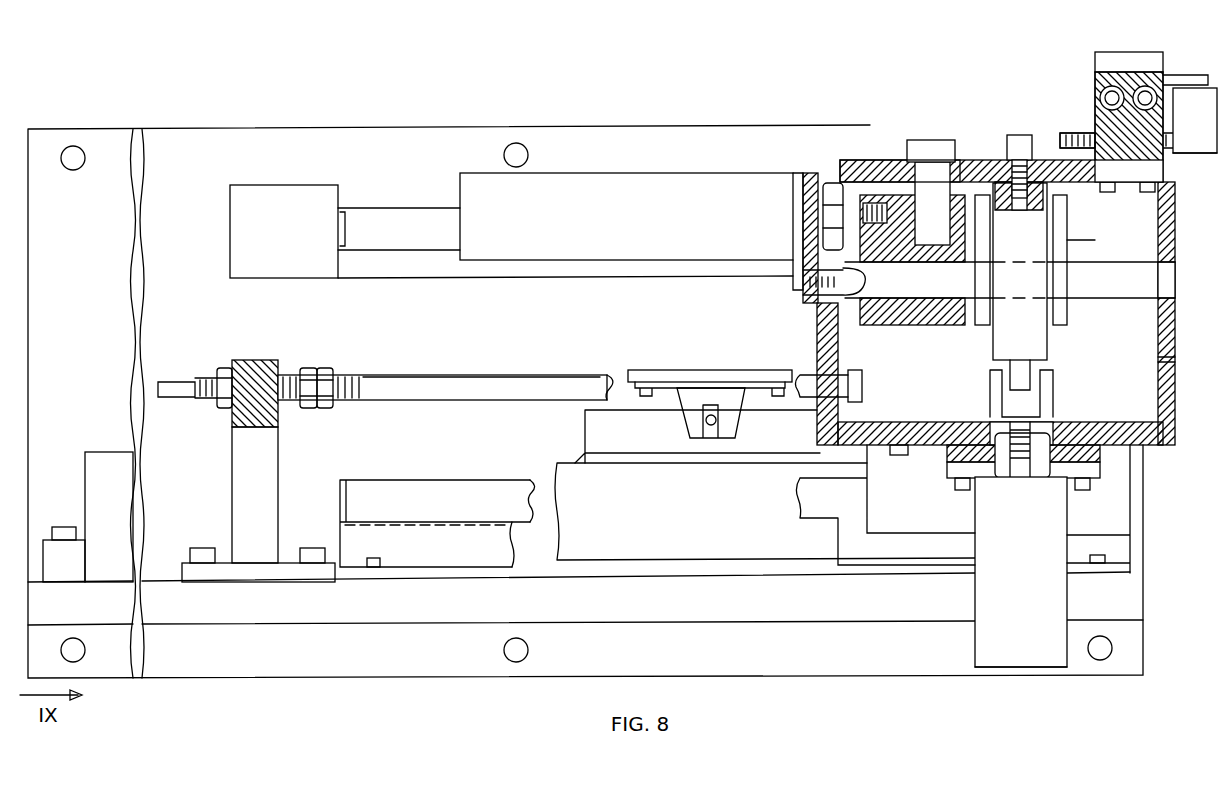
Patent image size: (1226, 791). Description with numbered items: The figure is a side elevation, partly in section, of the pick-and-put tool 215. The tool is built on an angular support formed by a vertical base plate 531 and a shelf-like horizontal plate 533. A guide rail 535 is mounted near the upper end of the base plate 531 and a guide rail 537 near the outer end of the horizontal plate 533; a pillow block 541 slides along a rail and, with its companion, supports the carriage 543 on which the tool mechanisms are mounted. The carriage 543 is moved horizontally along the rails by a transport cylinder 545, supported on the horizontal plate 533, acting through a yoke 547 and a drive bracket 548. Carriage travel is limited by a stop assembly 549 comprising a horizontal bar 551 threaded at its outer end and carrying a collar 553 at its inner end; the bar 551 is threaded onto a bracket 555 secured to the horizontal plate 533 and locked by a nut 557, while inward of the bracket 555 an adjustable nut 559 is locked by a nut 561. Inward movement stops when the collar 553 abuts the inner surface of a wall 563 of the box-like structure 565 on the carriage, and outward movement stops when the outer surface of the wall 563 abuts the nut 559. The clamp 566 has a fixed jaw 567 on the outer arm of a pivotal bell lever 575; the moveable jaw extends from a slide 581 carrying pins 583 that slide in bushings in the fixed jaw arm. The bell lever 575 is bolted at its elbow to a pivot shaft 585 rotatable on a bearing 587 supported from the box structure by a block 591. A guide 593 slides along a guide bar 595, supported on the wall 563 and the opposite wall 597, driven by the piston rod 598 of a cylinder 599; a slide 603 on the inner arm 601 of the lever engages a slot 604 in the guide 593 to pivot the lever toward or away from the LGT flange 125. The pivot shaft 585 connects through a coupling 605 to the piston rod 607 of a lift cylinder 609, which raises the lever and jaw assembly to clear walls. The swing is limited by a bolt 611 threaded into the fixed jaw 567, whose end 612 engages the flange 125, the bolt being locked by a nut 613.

The LGT flange 125 is at (1197, 153).
The pick-and-put tool 215 is at (932, 704).
The vertical base plate 531 is at (106, 142).
The horizontal plate 533 is at (395, 660).
The guide rail 535 is at (400, 215).
The guide rail 537 is at (447, 492).
The pillow block 541 is at (882, 525).
The carriage 543 is at (1184, 229).
The transport cylinder 545 is at (640, 560).
The yoke 547 is at (660, 380).
The drive bracket 548 is at (595, 430).
The stop assembly 549 is at (494, 409).
The horizontal bar 551 is at (465, 382).
The collar 553 is at (845, 373).
The bracket 555 is at (240, 478).
The nut 557 is at (217, 408).
The nut 559 is at (327, 408).
The nut 561 is at (305, 410).
The wall 563 is at (815, 428).
The box-like structure 565 is at (926, 455).
The clamp 566 is at (1088, 50).
The fixed jaw 567 is at (1185, 75).
The bell lever 575 is at (988, 133).
The slide 581 is at (1095, 132).
The pins 583 is at (1100, 120).
The pivot shaft 585 is at (1004, 338).
The bearing 587 is at (1056, 230).
The block 591 is at (1068, 245).
The guide 593 is at (836, 178).
The guide bar 595 is at (1120, 287).
The wall 597 is at (1170, 345).
The piston rod 598 is at (800, 221).
The cylinder 599 is at (632, 192).
The inner arm 601 is at (950, 142).
The slide 603 is at (930, 210).
The slot 604 is at (935, 248).
The coupling 605 is at (1028, 398).
The piston rod 607 is at (1022, 473).
The lift cylinder 609 is at (1020, 645).
The bolt 611 is at (1086, 185).
The end 612 is at (1175, 130).
The nut 613 is at (1090, 128).